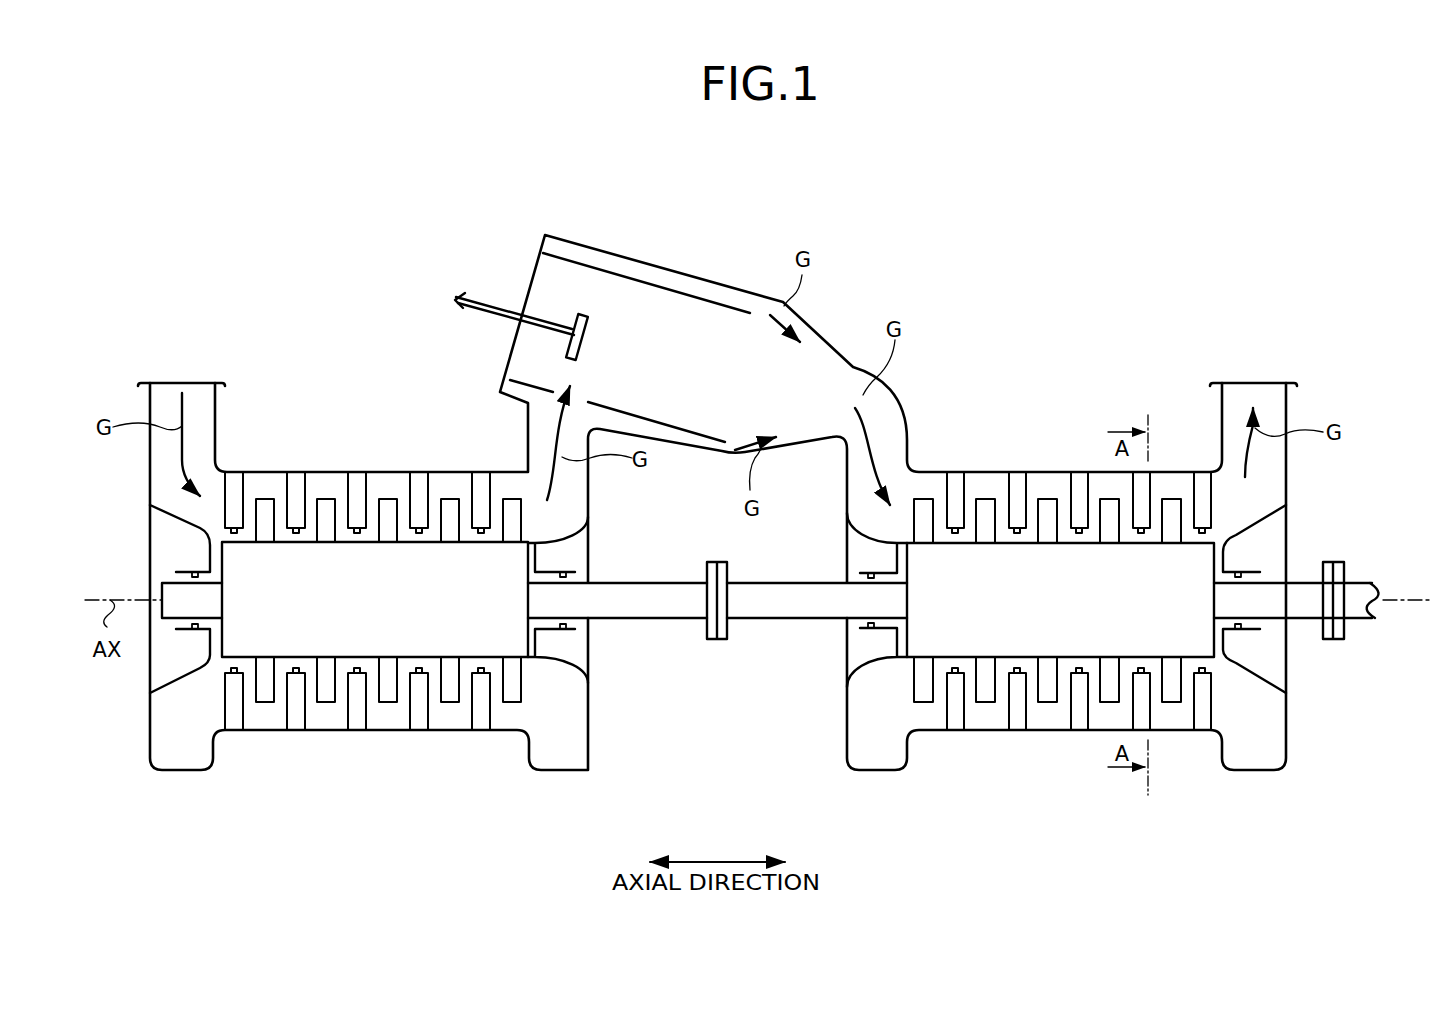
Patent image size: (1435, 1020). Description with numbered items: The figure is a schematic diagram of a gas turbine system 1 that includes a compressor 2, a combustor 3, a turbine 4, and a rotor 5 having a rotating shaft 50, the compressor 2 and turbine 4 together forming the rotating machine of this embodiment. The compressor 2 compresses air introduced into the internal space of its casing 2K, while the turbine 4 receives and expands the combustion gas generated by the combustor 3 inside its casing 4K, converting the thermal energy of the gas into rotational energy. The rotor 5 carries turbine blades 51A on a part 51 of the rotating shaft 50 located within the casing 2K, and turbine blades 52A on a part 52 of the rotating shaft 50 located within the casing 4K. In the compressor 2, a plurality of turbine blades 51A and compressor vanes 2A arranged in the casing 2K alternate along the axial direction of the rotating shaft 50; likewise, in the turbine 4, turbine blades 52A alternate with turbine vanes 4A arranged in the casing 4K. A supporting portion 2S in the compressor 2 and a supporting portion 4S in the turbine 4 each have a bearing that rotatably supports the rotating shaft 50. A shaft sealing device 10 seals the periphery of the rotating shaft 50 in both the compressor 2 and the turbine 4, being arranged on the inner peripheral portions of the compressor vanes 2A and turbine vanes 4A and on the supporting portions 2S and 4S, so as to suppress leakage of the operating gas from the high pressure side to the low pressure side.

The gas turbine system 1 is at (262, 197).
The compressor 2 is at (152, 823).
The compressor vane 2A is at (357, 478).
The casing 2K is at (386, 730).
The supporting portion 2S is at (200, 546).
The combustor 3 is at (498, 200).
The turbine 4 is at (847, 823).
The turbine vane 4A is at (1015, 480).
The casing 4K is at (1036, 730).
The supporting portion 4S is at (885, 554).
The rotor 5 is at (791, 621).
The shaft sealing device 10 is at (283, 527).
The rotating shaft 50 is at (675, 620).
The part of the rotating shaft 51 is at (361, 615).
The turbine blade 51A is at (328, 505).
The part of the rotating shaft 52 is at (1050, 615).
The turbine blade 52A is at (1048, 505).